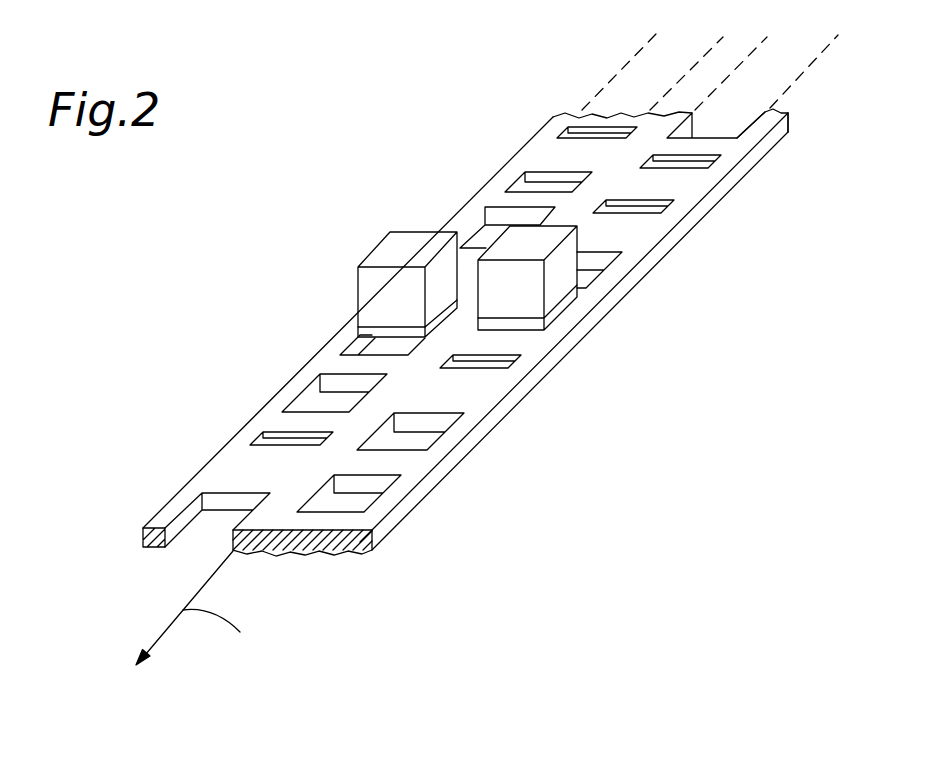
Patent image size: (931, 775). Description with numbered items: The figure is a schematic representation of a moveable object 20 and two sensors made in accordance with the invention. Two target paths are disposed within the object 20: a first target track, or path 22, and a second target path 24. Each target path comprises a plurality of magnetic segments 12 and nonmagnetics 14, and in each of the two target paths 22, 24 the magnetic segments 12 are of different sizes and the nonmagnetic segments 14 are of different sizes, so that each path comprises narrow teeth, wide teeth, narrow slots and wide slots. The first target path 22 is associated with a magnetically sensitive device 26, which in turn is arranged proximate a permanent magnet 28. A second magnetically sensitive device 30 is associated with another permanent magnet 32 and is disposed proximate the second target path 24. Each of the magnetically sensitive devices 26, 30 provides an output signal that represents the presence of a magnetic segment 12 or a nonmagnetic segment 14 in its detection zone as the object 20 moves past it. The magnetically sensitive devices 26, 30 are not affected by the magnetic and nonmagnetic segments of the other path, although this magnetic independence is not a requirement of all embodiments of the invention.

The magnetic segments 12 is at (678, 182).
The nonmagnetics 14 is at (547, 184).
The moveable object 20 is at (381, 541).
The first target path 22 is at (650, 72).
The second target path 24 is at (753, 85).
The magnetically sensitive device 26 is at (370, 333).
The permanent magnet 28 is at (368, 280).
The second magnetically sensitive device 30 is at (527, 327).
The permanent magnet 32 is at (560, 277).